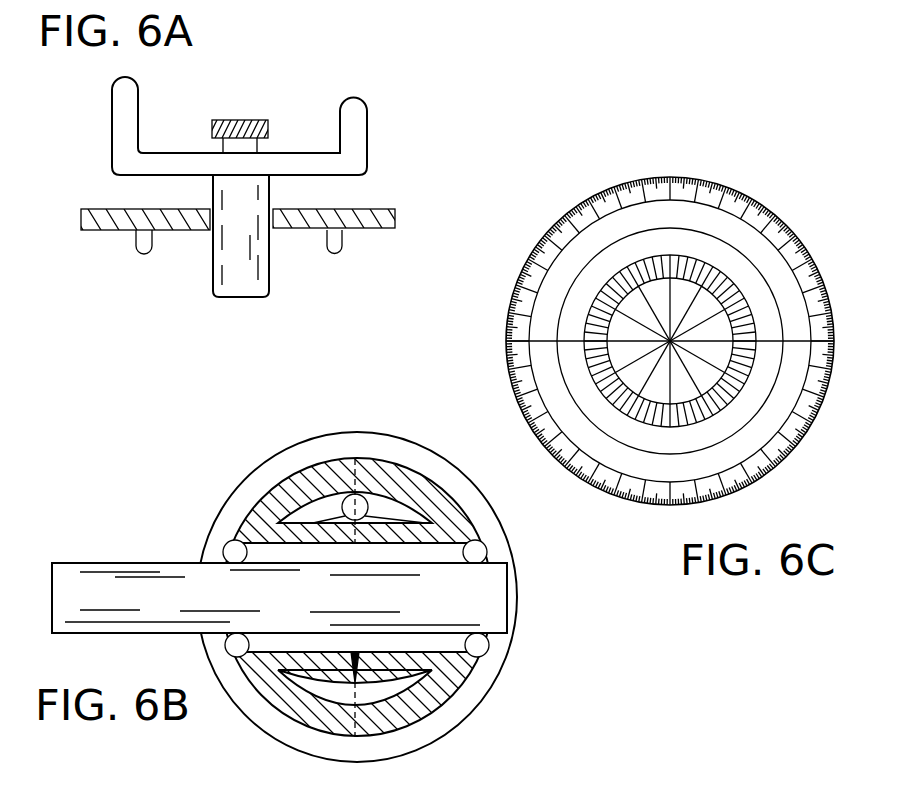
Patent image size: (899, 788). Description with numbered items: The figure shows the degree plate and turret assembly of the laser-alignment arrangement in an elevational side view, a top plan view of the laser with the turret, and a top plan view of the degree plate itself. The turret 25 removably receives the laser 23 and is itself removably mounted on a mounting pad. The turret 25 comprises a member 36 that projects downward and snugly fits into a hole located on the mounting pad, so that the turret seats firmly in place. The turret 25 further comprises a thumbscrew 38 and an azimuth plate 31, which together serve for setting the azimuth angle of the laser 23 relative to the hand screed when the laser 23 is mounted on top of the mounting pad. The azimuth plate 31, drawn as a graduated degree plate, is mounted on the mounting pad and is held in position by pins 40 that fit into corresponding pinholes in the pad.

In FIG. 6B, the laser 23 is at (108, 590).
In FIG. 6A, the turret 25 is at (360, 118).
In FIG. 6B, the turret 25 is at (470, 690).
In FIG. 6A, the azimuth plate 31 is at (403, 197).
In FIG. 6B, the azimuth plate 31 is at (267, 458).
In FIG. 6C, the azimuth plate 31 is at (655, 176).
In FIG. 6A, the member 36 is at (230, 277).
In FIG. 6A, the thumbscrew 38 is at (250, 118).
In FIG. 6A, the pins 40 is at (137, 247).